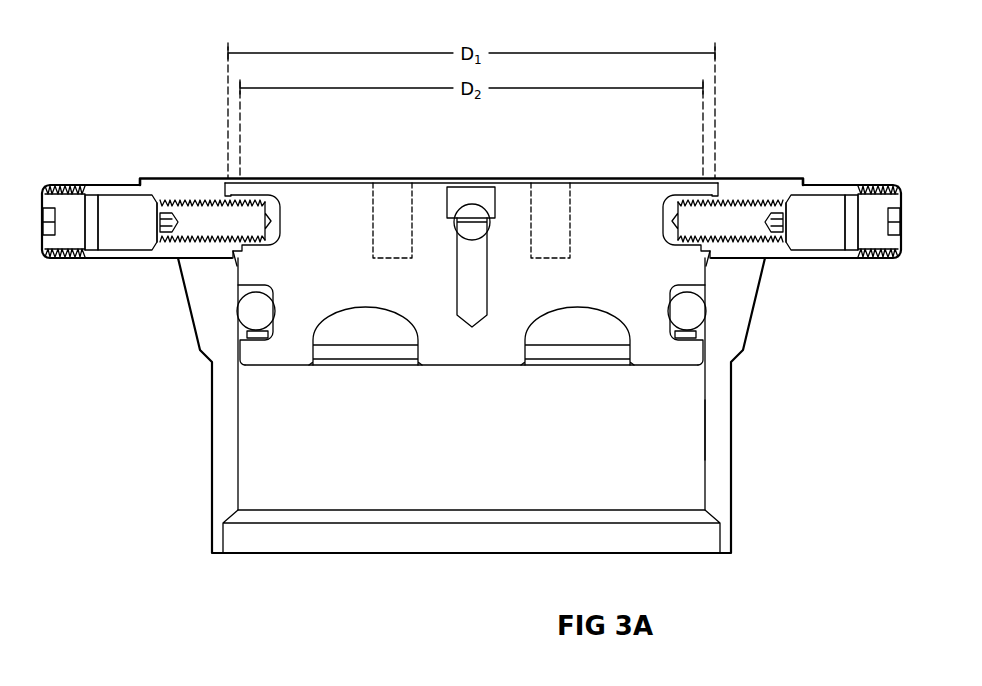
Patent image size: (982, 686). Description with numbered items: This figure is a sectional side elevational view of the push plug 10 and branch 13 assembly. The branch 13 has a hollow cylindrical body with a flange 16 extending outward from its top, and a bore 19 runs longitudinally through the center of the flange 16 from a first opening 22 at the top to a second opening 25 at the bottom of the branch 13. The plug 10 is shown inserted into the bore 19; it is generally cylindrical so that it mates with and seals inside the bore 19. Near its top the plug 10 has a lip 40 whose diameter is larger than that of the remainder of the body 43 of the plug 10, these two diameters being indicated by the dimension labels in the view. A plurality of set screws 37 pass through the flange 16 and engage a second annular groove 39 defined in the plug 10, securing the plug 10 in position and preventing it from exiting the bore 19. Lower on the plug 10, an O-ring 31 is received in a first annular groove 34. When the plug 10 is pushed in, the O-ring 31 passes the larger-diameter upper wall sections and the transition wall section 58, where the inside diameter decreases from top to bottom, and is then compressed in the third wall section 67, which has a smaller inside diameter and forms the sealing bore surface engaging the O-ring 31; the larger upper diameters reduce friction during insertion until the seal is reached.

The push plug 10 is at (310, 256).
The branch 13 is at (172, 438).
The flange 16 is at (93, 185).
The bore 19 is at (716, 181).
The first opening 22 is at (431, 167).
The second opening 25 is at (312, 562).
The O-ring 31 is at (252, 310).
The first annular groove 34 is at (262, 337).
The set screws 37 is at (197, 218).
The second annular groove 39 is at (265, 193).
The lip 40 is at (249, 180).
The body of the plug 43 is at (268, 262).
The transition wall section 58 is at (708, 262).
The third wall section 67 is at (703, 421).